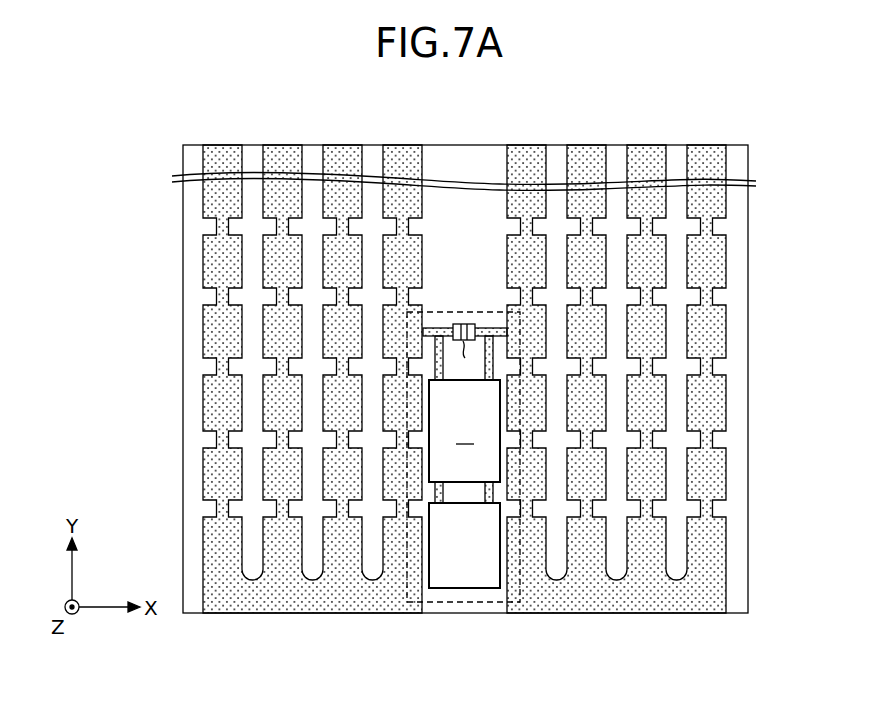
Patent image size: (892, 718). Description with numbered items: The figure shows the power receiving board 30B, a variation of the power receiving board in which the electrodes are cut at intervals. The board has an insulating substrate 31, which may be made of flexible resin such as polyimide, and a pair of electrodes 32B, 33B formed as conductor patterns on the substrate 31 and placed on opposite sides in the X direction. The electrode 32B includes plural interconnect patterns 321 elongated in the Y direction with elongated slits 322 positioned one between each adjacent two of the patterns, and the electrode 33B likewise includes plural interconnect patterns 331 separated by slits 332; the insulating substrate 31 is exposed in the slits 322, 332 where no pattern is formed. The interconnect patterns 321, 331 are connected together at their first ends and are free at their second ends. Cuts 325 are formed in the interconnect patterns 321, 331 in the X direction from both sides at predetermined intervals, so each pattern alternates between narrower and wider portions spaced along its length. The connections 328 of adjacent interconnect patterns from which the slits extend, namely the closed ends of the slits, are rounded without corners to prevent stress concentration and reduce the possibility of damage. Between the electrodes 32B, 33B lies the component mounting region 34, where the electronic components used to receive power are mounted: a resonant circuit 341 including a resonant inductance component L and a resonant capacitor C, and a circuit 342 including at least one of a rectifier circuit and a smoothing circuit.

The power receiving board 30B is at (97, 102).
The insulating substrate 31 is at (188, 149).
The electrode 32B is at (422, 146).
The electrode 33B is at (726, 146).
The component mounting region 34 is at (462, 311).
The interconnect patterns 321 is at (222, 268).
The slits 322 is at (245, 296).
The cuts 325 is at (213, 368).
The connections of adjacent interconnect patterns 328 is at (322, 576).
The interconnect patterns 331 is at (708, 268).
The slits 332 is at (677, 294).
The resonant circuit 341 is at (505, 482).
The circuit 342 is at (463, 590).